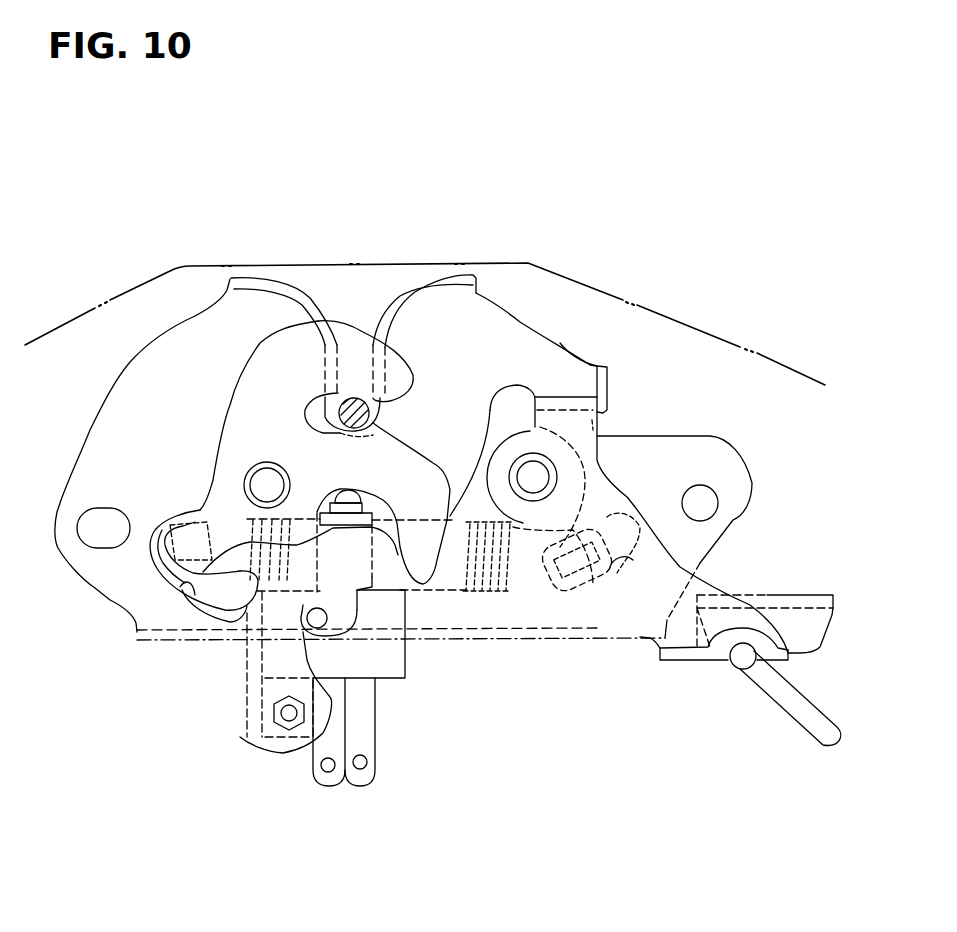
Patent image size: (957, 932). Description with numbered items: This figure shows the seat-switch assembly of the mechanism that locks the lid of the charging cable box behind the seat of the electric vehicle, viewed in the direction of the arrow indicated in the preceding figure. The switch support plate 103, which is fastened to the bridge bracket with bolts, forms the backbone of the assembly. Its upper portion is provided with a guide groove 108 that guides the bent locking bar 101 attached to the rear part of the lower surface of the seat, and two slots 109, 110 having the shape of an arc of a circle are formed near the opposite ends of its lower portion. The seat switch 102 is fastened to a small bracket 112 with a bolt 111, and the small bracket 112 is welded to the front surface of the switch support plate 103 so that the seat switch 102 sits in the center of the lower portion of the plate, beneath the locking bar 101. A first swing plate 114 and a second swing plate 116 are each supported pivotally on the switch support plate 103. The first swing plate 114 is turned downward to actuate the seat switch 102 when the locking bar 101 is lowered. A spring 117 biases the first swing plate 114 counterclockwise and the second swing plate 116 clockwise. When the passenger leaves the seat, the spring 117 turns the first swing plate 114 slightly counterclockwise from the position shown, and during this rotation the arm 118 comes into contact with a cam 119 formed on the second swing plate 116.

The locking bar 101 is at (358, 392).
The seat switch 102 is at (406, 680).
The switch support plate 103 is at (110, 604).
The guide groove 108 is at (313, 300).
The slot 109 is at (200, 597).
The slot 110 is at (610, 568).
The bolt 111 is at (307, 743).
The small bracket 112 is at (240, 743).
The first swing plate 114 is at (213, 455).
The second swing plate 116 is at (493, 393).
The spring 117 is at (492, 590).
The arm 118 is at (437, 562).
The cam 119 is at (450, 520).